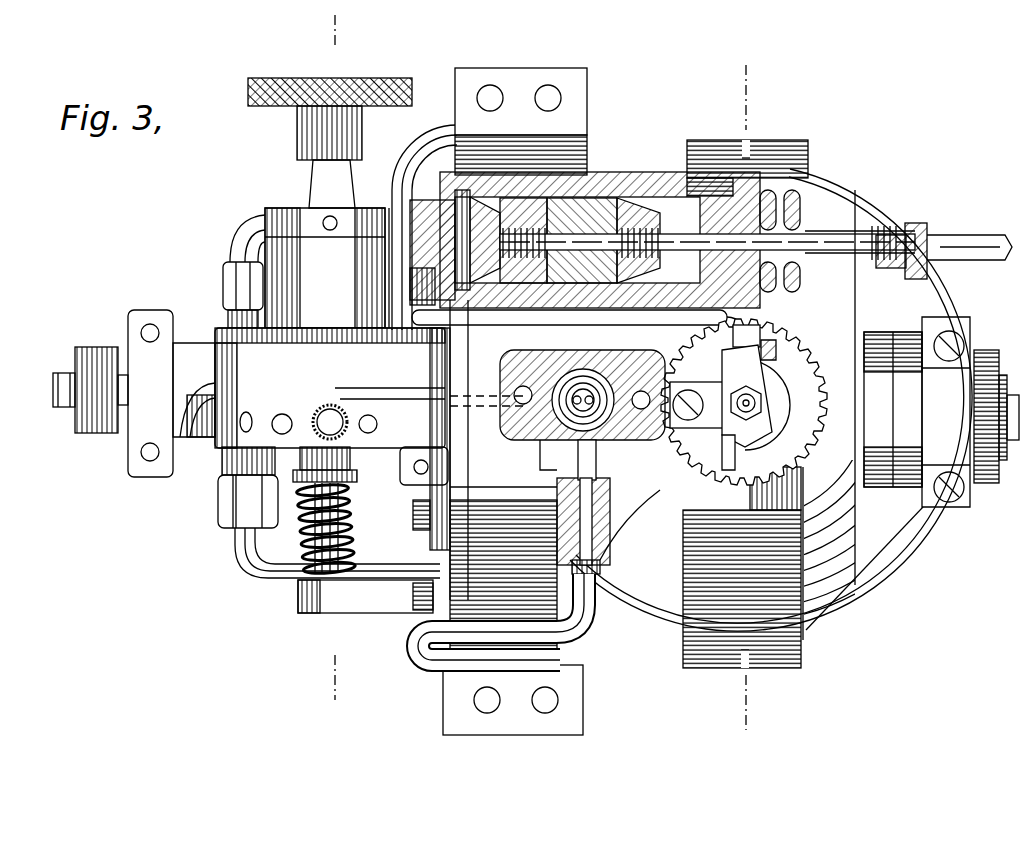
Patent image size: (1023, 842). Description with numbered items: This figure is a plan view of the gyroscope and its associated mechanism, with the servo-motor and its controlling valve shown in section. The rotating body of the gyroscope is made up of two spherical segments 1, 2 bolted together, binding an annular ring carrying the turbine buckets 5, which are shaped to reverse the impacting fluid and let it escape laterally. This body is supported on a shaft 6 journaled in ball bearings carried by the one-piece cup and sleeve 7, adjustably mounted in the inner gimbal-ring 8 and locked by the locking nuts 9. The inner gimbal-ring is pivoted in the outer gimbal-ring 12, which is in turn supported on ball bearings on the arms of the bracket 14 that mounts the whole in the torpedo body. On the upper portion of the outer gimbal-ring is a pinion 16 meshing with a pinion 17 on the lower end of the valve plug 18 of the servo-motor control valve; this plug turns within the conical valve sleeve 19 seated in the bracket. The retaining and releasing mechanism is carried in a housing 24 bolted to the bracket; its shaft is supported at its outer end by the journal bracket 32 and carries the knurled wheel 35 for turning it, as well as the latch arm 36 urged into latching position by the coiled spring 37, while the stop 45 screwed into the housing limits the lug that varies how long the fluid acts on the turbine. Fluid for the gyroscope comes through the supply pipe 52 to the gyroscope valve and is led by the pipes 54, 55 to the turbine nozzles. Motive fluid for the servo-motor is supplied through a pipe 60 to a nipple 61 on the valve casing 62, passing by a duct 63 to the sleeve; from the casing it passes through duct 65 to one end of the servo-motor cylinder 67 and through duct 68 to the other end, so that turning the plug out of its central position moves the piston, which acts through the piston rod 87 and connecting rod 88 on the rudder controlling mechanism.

The spherical segment 1 is at (835, 330).
The spherical segment 2 is at (700, 552).
The turbine buckets 5 is at (345, 357).
The shaft 6 is at (756, 397).
The one-piece cup and sleeve 7 is at (893, 409).
The inner gimbal-ring 8 is at (905, 560).
The locking nuts 9 is at (980, 355).
The outer gimbal-ring 12 is at (744, 416).
The bracket 14 is at (557, 396).
The pinion 16 is at (783, 405).
The pinion 17 is at (545, 455).
The valve plug 18 is at (590, 395).
The conical valve sleeve 19 is at (565, 390).
The housing 24 is at (341, 450).
The journal bracket 32 is at (373, 600).
The knurled wheel 35 is at (380, 81).
The latch arm 36 is at (352, 456).
The coiled spring 37 is at (350, 532).
The stop 45 is at (318, 414).
The supply pipe 52 is at (418, 148).
The pipe 54 is at (253, 570).
The pipe 55 is at (243, 245).
The pipe 60 is at (588, 640).
The nipple 61 is at (608, 572).
The valve casing 62 is at (648, 437).
The duct 63 is at (615, 510).
The duct 65 is at (533, 353).
The servo-motor cylinder 67 is at (598, 173).
The duct 68 is at (722, 353).
The piston rod 87 is at (823, 243).
The connecting rod 88 is at (957, 240).